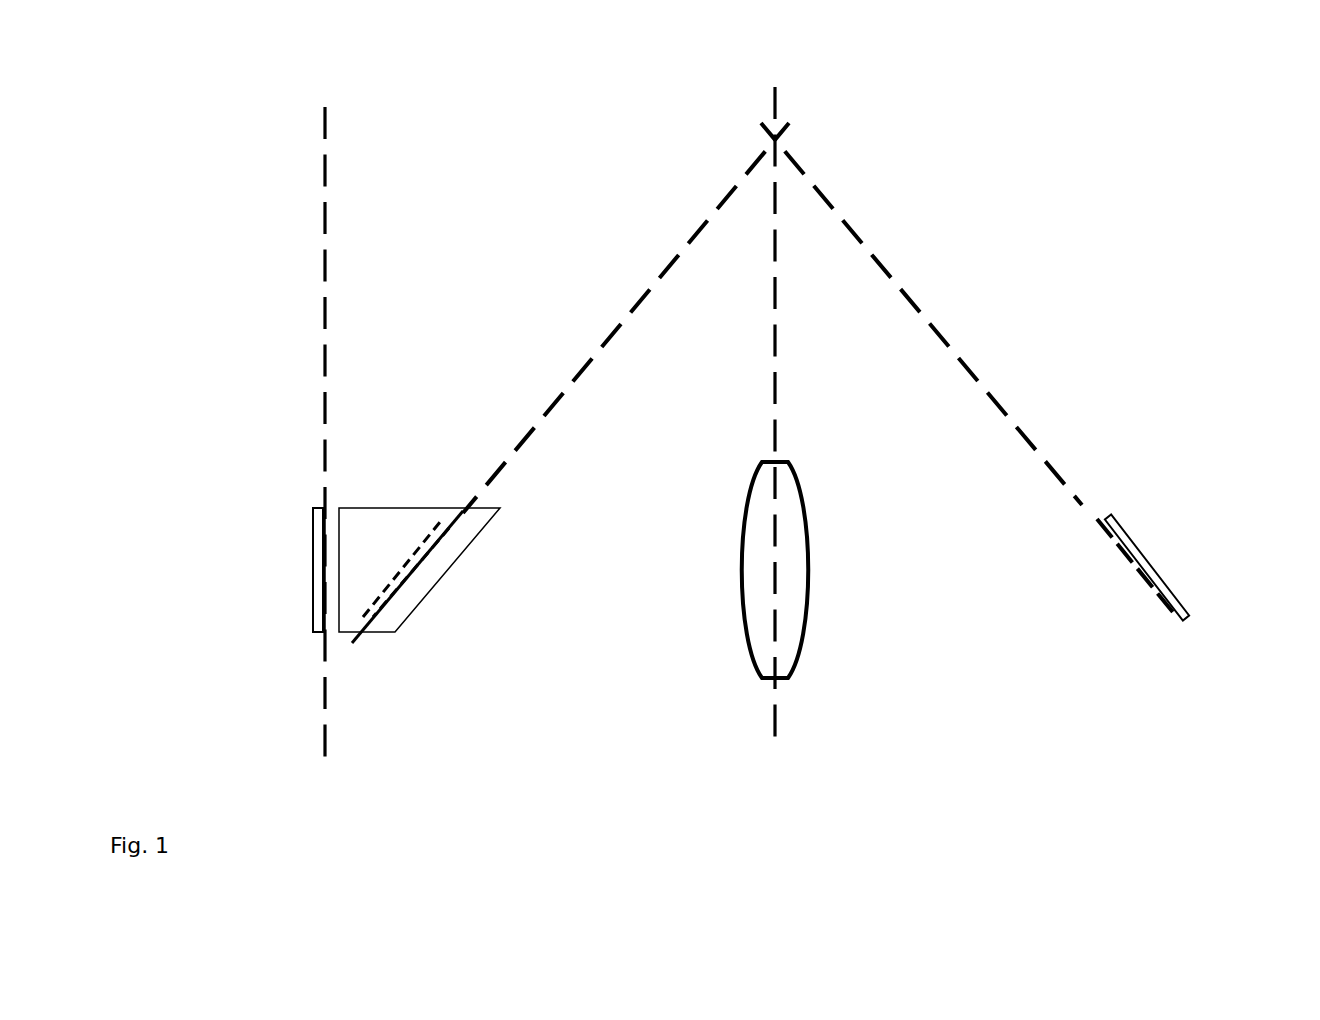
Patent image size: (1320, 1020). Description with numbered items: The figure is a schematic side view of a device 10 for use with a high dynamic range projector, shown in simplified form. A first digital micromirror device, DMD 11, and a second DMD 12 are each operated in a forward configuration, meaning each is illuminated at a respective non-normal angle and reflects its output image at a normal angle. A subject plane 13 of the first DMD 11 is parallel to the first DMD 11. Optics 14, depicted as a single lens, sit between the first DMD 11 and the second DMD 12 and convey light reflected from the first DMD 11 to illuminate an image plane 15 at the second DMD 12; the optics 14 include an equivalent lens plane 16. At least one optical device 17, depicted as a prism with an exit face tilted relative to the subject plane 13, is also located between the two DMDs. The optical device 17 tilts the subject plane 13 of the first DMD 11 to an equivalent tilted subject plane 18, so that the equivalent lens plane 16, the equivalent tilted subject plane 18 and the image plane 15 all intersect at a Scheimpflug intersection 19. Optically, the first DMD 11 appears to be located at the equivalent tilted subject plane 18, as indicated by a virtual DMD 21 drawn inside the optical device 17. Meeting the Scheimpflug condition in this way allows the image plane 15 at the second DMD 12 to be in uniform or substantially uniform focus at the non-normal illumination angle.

The device 10 is at (238, 744).
The first digital micromirror device (DMD) 11 is at (313, 563).
The second DMD 12 is at (1172, 587).
The subject plane 13 is at (323, 443).
The optics 14 is at (807, 570).
The image plane 15 is at (1080, 505).
The equivalent lens plane 16 is at (777, 428).
The optical device 17 is at (397, 632).
The equivalent tilted subject plane 18 is at (597, 345).
The Scheimpflug intersection 19 is at (777, 141).
The virtual DMD 21 is at (430, 527).